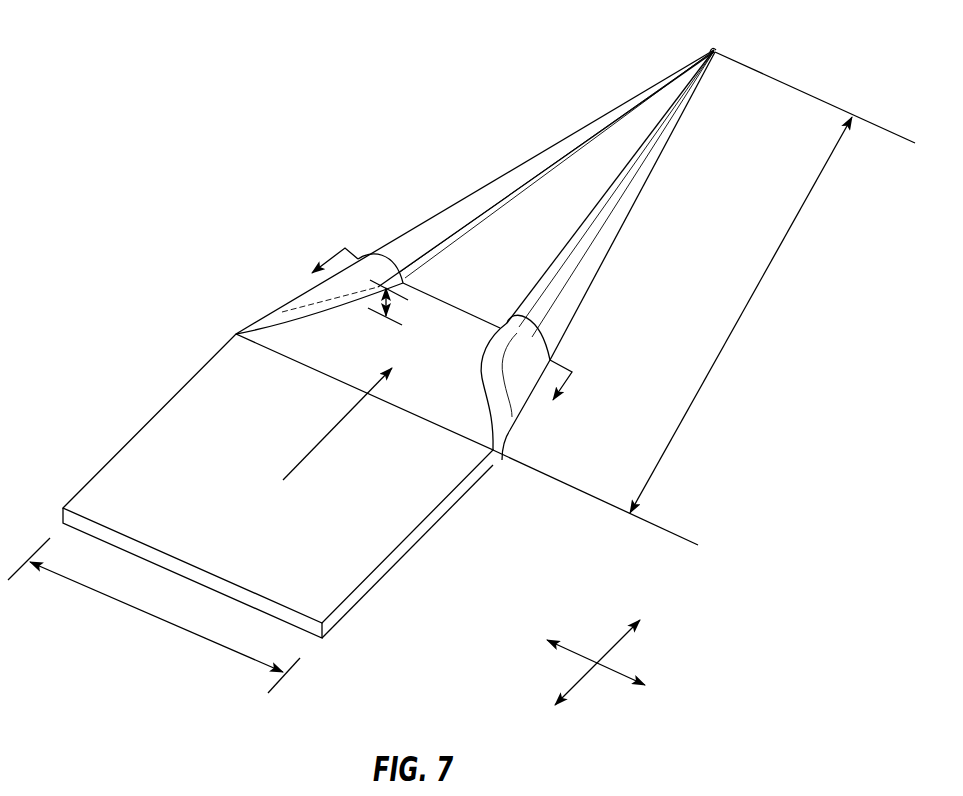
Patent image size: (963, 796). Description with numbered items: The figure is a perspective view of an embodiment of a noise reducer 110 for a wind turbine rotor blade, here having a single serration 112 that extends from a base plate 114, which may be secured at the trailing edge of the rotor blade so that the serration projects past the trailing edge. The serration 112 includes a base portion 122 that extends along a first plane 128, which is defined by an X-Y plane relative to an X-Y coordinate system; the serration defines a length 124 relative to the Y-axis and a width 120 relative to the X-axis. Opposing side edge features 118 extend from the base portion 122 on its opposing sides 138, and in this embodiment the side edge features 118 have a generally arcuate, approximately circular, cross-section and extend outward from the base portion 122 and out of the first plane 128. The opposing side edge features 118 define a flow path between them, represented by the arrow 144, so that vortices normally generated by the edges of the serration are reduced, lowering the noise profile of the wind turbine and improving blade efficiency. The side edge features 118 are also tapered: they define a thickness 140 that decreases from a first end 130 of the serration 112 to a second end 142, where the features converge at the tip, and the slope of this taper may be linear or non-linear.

The noise reducer 110 is at (210, 117).
The serration 112 is at (327, 77).
The base plate 114 is at (352, 578).
The side edge features 118 is at (440, 215).
The width 120 is at (143, 608).
The base portion 122 is at (572, 177).
The length 124 is at (722, 355).
The first plane 128 is at (665, 652).
The first end 130 is at (290, 300).
The opposing sides 138 is at (507, 200).
The thickness 140 is at (390, 303).
The second end 142 is at (715, 50).
The arrow representing flow path 144 is at (318, 443).